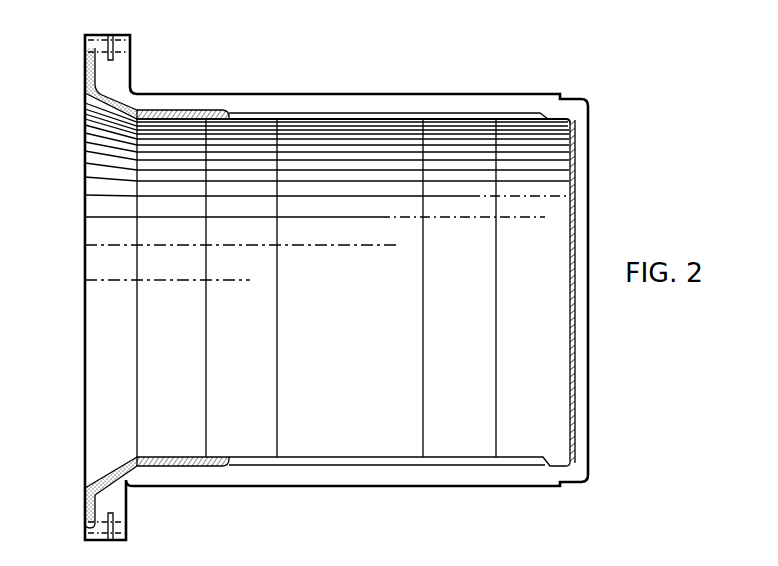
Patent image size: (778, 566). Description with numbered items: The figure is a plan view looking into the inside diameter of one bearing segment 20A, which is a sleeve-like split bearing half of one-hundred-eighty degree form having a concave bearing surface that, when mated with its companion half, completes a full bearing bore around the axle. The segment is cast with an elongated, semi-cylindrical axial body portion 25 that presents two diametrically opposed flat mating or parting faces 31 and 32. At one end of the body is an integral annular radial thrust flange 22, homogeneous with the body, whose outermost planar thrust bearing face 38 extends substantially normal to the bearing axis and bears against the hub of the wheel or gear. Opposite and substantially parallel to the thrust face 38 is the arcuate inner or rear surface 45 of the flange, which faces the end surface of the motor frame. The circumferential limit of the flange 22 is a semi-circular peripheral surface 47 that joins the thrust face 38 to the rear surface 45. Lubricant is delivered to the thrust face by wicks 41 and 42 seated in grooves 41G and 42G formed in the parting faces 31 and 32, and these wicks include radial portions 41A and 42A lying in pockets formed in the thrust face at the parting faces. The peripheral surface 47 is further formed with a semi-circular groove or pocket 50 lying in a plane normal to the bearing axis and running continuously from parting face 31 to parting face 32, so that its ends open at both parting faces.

The bearing segment 20A is at (477, 94).
The thrust flange 22 is at (136, 41).
The axial body portion 25 is at (591, 187).
The mating face 31 is at (350, 107).
The mating face 32 is at (382, 473).
The thrust bearing face 38 is at (84, 181).
The wick 41 is at (193, 86).
The radial portion of wick 41A is at (88, 64).
The groove 41G is at (158, 110).
The wick 42 is at (197, 459).
The radial portion of wick 42A is at (85, 505).
The groove 42G is at (193, 463).
The arcuate inner surface 45 is at (140, 535).
The semi-circular peripheral surface 47 is at (96, 542).
The semi-circular groove 50 is at (112, 34).